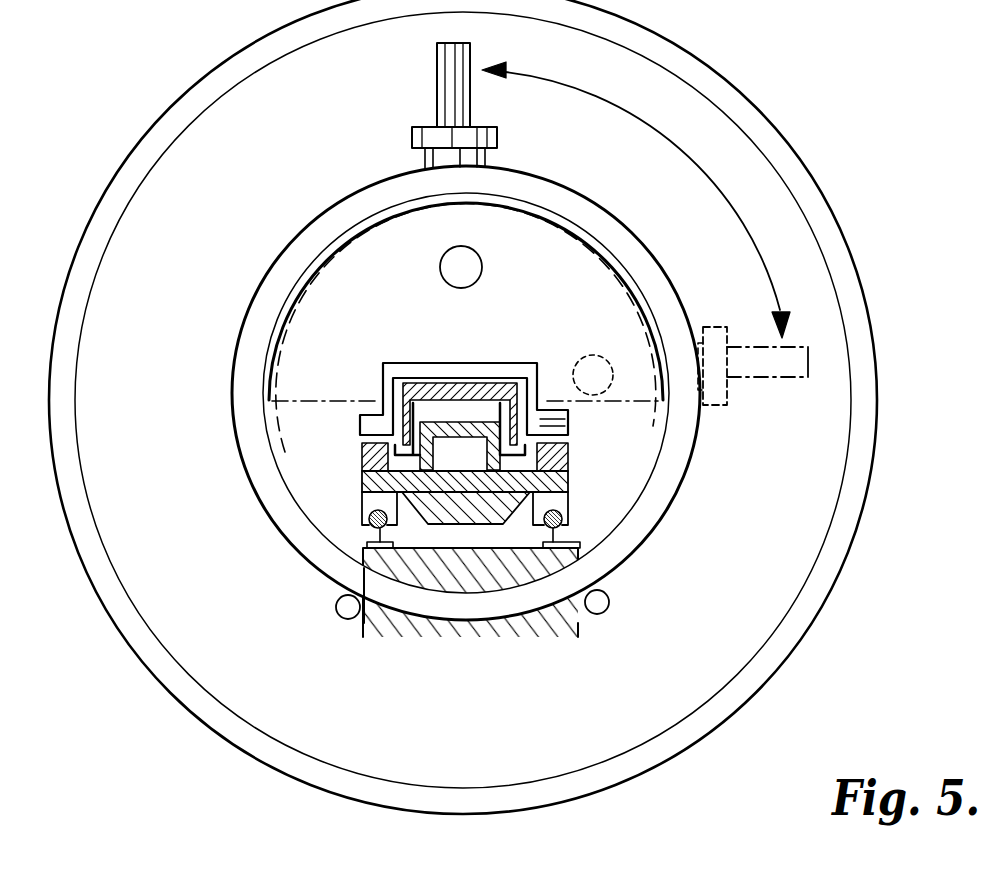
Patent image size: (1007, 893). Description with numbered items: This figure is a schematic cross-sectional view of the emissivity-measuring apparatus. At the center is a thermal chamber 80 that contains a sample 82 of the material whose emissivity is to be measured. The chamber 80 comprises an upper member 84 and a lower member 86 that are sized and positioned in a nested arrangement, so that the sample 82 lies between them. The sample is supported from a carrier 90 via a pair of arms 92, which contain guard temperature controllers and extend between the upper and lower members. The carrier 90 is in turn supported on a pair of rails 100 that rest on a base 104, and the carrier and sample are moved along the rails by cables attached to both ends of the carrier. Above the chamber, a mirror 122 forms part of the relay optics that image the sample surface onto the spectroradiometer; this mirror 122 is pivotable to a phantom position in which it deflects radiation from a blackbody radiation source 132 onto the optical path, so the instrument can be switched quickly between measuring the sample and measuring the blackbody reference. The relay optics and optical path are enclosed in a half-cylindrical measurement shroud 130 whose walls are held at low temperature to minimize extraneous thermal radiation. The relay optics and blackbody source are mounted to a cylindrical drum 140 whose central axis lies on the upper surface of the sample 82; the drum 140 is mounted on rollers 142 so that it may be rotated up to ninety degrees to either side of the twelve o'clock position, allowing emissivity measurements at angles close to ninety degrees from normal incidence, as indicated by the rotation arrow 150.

The thermal chamber 80 is at (436, 346).
The sample 82 is at (484, 392).
The upper member 84 is at (414, 362).
The lower member 86 is at (458, 458).
The carrier 90 is at (518, 597).
The arms 92 is at (360, 457).
The rails 100 is at (370, 522).
The base 104 is at (493, 586).
The mirror 122 is at (482, 264).
The measurement shroud 130 is at (262, 446).
The blackbody radiation source 132 is at (442, 95).
The cylindrical drum 140 is at (262, 294).
The rollers 142 is at (336, 611).
The rotation arrow 150 is at (778, 132).